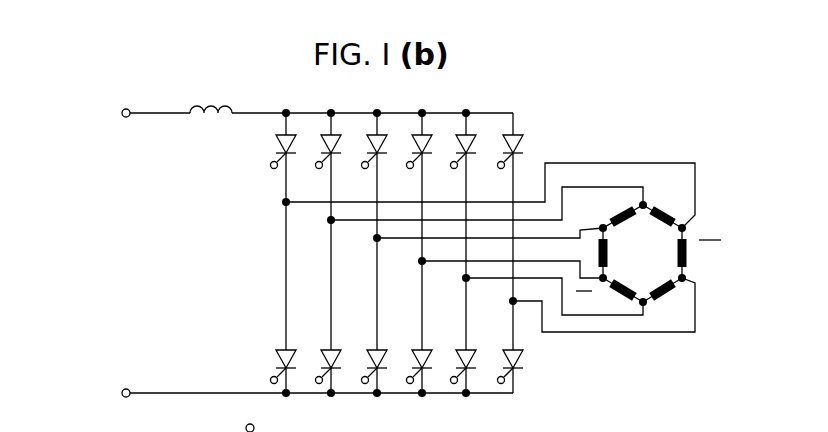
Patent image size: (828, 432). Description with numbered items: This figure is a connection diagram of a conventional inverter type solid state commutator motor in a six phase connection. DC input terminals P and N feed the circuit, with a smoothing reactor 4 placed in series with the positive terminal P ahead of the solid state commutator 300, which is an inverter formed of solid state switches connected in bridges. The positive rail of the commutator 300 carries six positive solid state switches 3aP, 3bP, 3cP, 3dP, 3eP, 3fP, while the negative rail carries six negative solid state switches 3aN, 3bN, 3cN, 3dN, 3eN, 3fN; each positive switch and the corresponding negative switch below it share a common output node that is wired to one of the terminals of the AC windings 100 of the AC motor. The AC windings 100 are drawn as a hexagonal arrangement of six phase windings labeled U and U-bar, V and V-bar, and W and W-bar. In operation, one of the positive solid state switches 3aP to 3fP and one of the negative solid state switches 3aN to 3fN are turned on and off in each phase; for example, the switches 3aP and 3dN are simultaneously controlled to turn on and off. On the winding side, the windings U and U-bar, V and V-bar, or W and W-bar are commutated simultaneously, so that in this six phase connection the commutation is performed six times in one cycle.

The smoothing reactor 4 is at (207, 112).
The positive solid state switch 3aP is at (277, 143).
The positive solid state switch 3bP is at (322, 147).
The positive solid state switch 3cP is at (368, 147).
The positive solid state switch 3dP is at (414, 148).
The positive solid state switch 3eP is at (462, 148).
The positive solid state switch 3fP is at (517, 150).
The negative solid state switch 3aN is at (275, 366).
The negative solid state switch 3bN is at (340, 362).
The negative solid state switch 3cN is at (388, 362).
The negative solid state switch 3dN is at (434, 362).
The negative solid state switch 3eN is at (480, 362).
The negative solid state switch 3fN is at (529, 365).
The solid state commutator 300 is at (240, 271).
The AC windings 100 is at (660, 266).